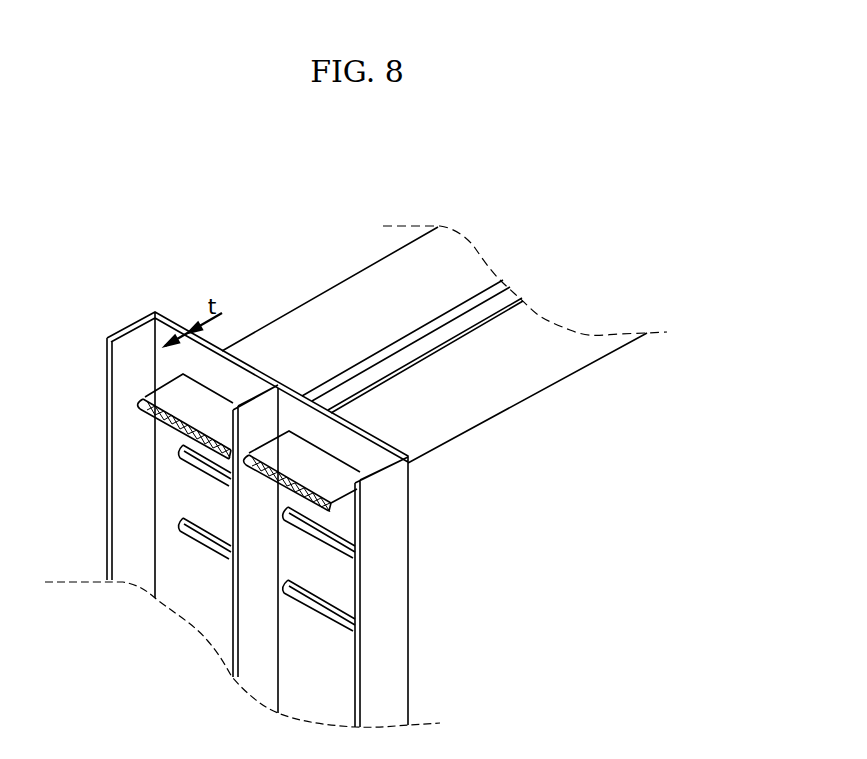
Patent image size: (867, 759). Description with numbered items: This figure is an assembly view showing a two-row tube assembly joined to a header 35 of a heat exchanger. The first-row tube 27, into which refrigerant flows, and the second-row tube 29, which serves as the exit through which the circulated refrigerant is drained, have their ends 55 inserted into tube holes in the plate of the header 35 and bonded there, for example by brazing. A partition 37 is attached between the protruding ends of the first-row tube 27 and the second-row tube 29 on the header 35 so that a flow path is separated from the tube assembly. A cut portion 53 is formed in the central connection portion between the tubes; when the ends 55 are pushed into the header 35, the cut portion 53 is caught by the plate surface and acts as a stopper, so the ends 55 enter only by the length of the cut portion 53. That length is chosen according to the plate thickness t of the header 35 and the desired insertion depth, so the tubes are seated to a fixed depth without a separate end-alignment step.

The first-row tube 27 is at (397, 277).
The second-row tube 29 is at (560, 357).
The header 35 is at (387, 442).
The partition 37 is at (266, 440).
The cut portion 53 is at (266, 432).
The ends 55 is at (162, 398).